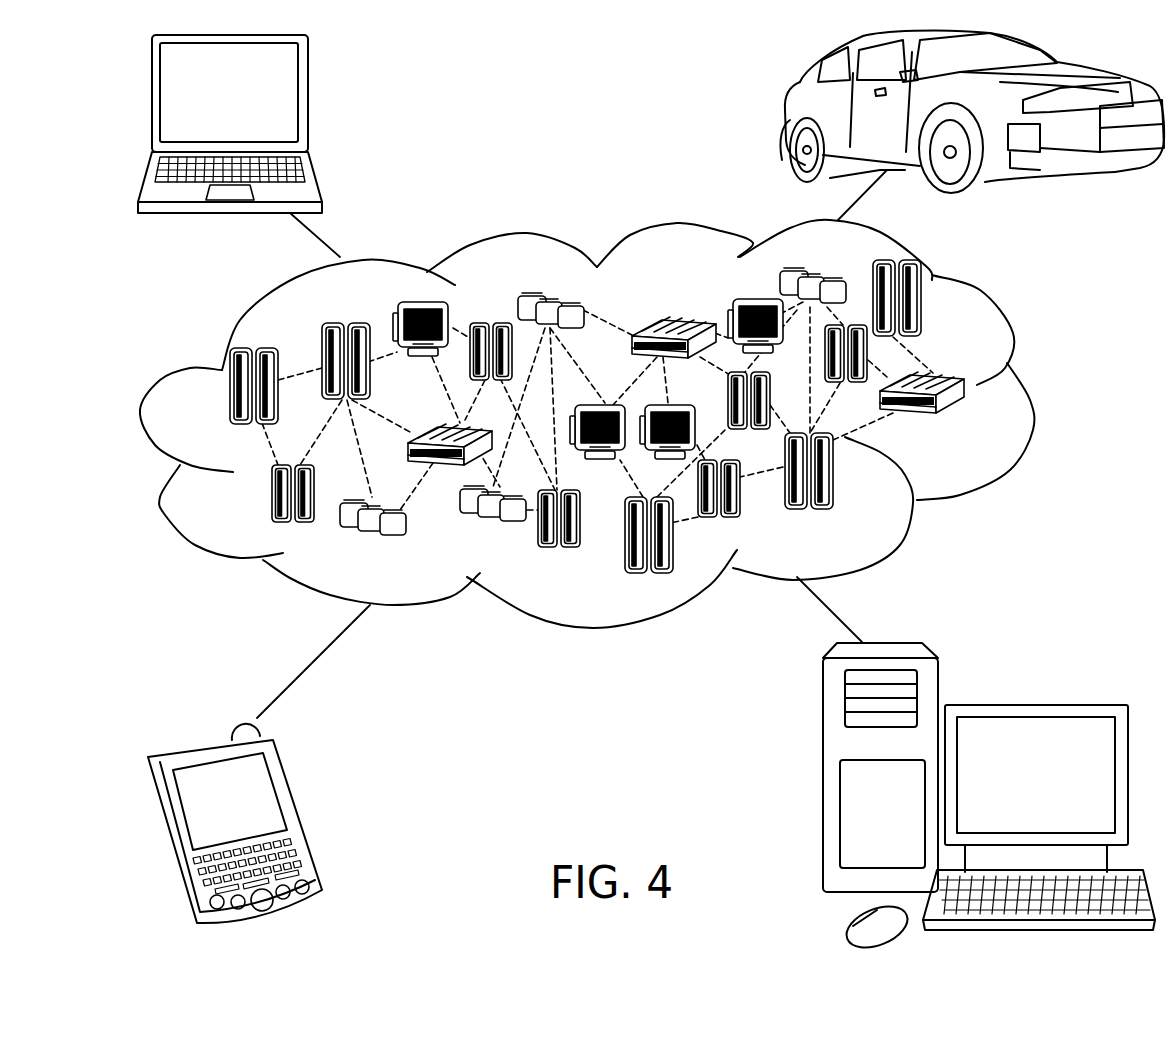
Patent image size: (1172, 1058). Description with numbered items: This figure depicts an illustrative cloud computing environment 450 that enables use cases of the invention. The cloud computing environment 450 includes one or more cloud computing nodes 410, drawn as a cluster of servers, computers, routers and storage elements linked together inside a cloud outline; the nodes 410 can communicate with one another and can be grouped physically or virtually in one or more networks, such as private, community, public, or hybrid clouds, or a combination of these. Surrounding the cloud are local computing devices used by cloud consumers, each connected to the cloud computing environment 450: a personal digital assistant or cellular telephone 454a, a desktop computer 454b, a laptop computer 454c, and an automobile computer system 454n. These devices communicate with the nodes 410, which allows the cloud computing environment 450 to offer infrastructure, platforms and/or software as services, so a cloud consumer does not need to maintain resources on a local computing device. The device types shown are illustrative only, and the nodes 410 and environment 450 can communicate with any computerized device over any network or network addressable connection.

The laptop computer 454c is at (307, 103).
The automobile computer system 454n is at (788, 115).
The personal digital assistant (PDA) or cellular telephone 454a is at (302, 813).
The desktop computer 454b is at (1033, 702).
The cloud computing environment 450 is at (1032, 393).
The cloud computing nodes 410 is at (665, 416).